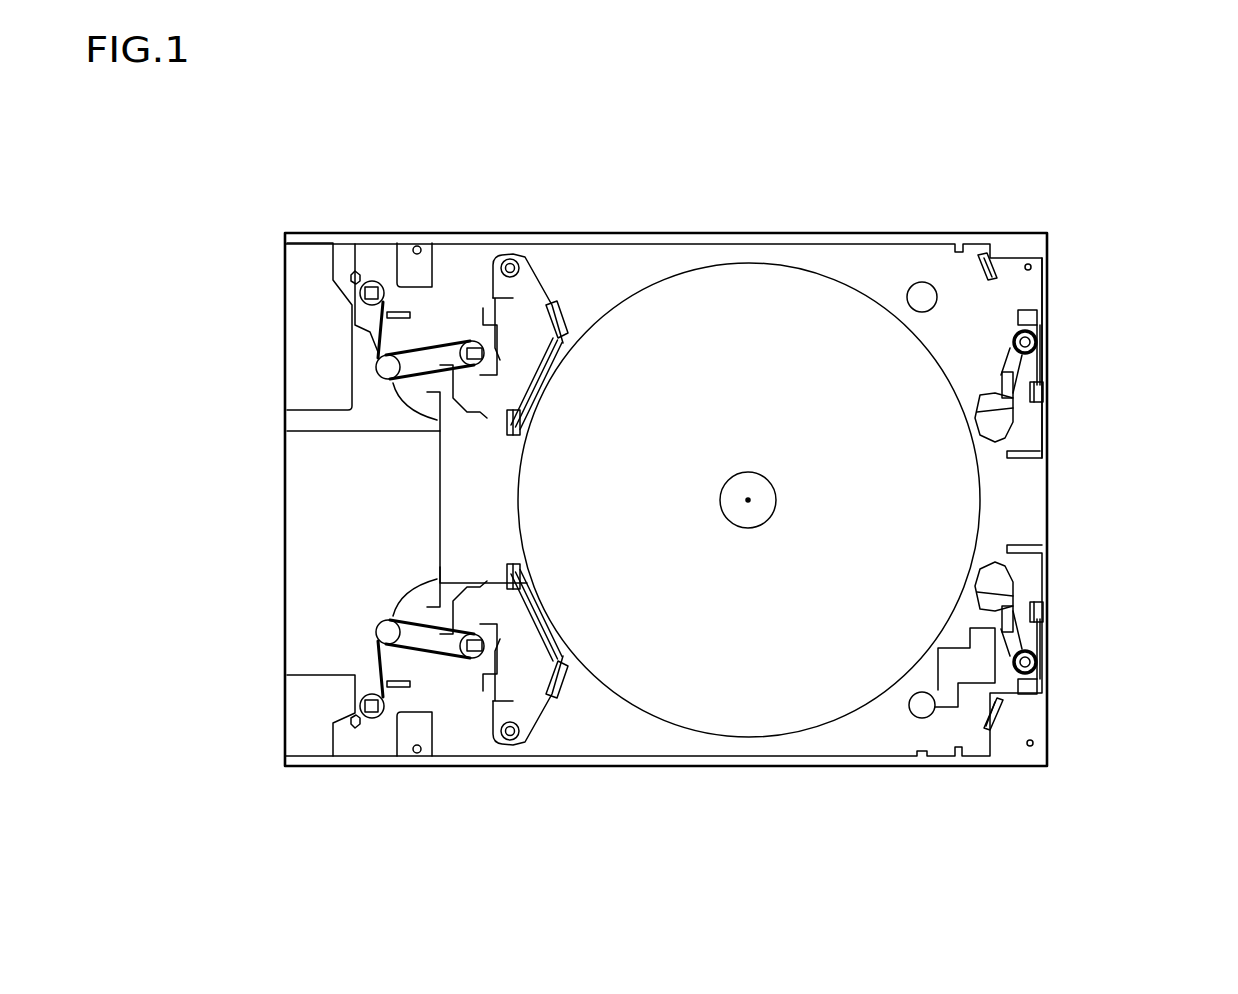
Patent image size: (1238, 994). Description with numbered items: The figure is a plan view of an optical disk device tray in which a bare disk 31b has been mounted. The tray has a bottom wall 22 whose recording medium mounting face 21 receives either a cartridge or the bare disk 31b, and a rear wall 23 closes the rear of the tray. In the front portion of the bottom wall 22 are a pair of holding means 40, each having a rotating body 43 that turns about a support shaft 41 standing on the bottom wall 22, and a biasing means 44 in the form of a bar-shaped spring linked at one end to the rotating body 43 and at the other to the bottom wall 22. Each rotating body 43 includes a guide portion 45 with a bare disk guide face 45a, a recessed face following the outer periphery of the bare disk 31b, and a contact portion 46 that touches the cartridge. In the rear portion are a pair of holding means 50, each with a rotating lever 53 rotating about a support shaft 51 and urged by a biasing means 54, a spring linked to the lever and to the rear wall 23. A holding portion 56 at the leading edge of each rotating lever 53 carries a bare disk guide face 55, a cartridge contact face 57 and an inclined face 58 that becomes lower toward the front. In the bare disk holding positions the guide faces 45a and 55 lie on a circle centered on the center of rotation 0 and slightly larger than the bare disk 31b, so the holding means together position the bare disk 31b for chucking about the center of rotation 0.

The center of rotation 0 is at (747, 501).
The recording medium mounting face 21 is at (885, 267).
The bottom wall 22 is at (915, 262).
The rear wall 23 is at (1044, 300).
The bare disk 31b is at (753, 718).
The holding means 40 is at (442, 496).
The support shaft 41 is at (510, 262).
The rotating body 43 is at (513, 298).
The biasing means 44 is at (440, 352).
The guide portion 45 is at (552, 378).
The bare disk guide face 45a is at (530, 420).
The contact portion 46 is at (558, 314).
The holding means 50 is at (1116, 505).
The support shaft 51 is at (1037, 342).
The rotating lever 53 is at (1042, 394).
The biasing means 54 is at (1040, 366).
The bare disk guide face 55 is at (924, 478).
The holding portion 56 is at (988, 398).
The cartridge contact face 57 is at (990, 403).
The inclined face 58 is at (975, 443).